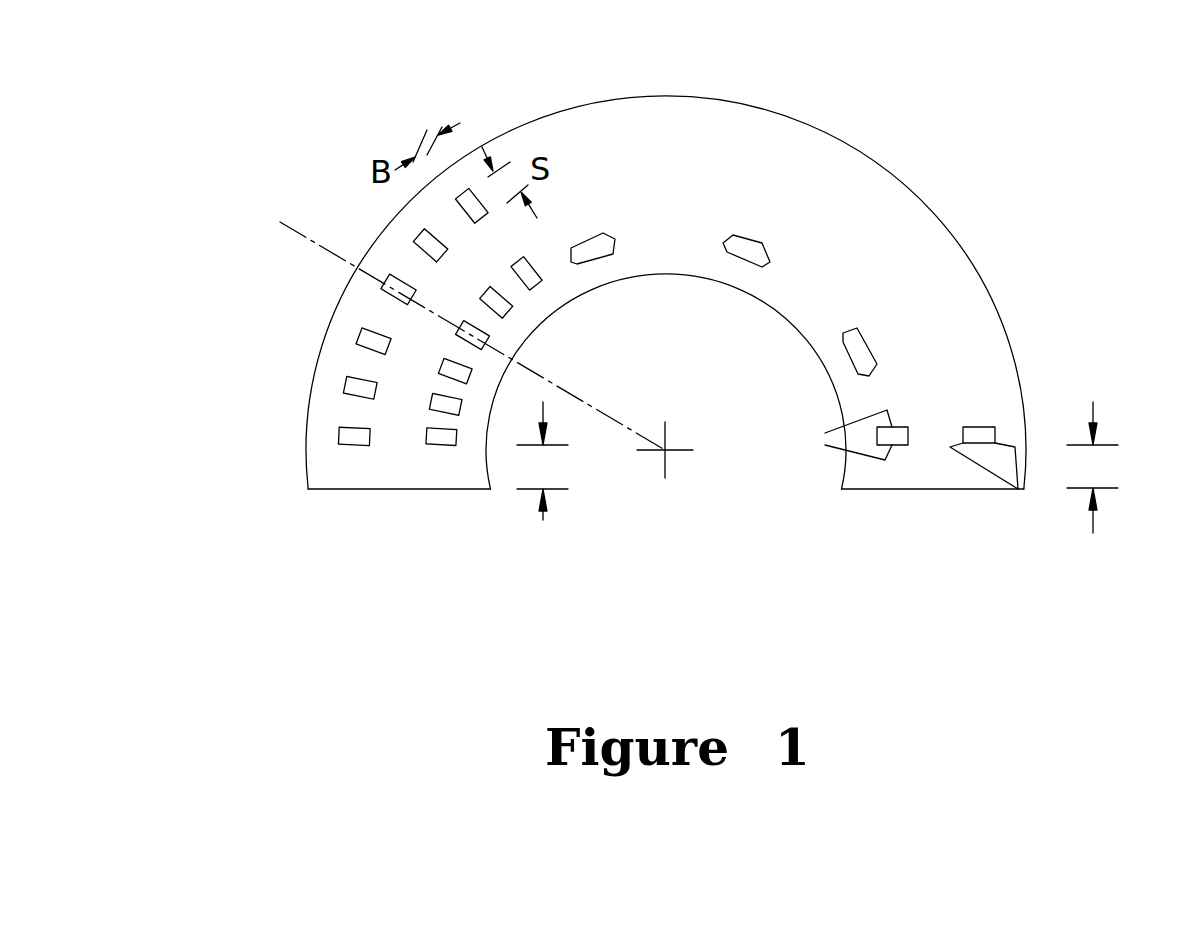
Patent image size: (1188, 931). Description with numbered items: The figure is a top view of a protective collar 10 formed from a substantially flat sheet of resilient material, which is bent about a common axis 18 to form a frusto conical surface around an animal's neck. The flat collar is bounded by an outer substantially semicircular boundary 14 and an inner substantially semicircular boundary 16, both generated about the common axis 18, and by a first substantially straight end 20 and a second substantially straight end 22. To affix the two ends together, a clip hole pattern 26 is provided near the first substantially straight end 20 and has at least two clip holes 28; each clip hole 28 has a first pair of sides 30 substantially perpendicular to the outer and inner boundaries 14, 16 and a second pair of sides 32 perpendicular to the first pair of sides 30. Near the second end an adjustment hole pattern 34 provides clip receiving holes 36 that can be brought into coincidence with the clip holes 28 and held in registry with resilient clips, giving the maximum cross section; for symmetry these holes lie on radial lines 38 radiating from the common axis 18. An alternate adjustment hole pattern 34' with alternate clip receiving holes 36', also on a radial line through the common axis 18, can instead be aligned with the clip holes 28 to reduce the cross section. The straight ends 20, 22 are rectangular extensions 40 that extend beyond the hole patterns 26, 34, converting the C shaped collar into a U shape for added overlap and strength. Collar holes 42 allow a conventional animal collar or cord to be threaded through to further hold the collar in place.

The protective collar 10 is at (779, 538).
The outer substantially semicircular boundary 14 is at (805, 123).
The inner substantially semicircular boundary 16 is at (717, 282).
The common axis 18 is at (665, 450).
The first substantially straight end 20 is at (935, 489).
The second substantially straight end 22 is at (440, 489).
The clip hole pattern 26 is at (1038, 422).
The clip holes 28 is at (995, 427).
The first pair of sides 30 is at (838, 436).
The second pair of sides 32 is at (998, 494).
The adjustment hole pattern 34 is at (246, 465).
The alternate adjustment hole pattern 34' is at (254, 410).
The clip receiving holes 36 is at (368, 508).
The alternate clip receiving holes 36' is at (322, 380).
The radial lines 38 is at (575, 398).
The rectangular extensions 40 is at (830, 479).
The collar holes 42 is at (592, 235).